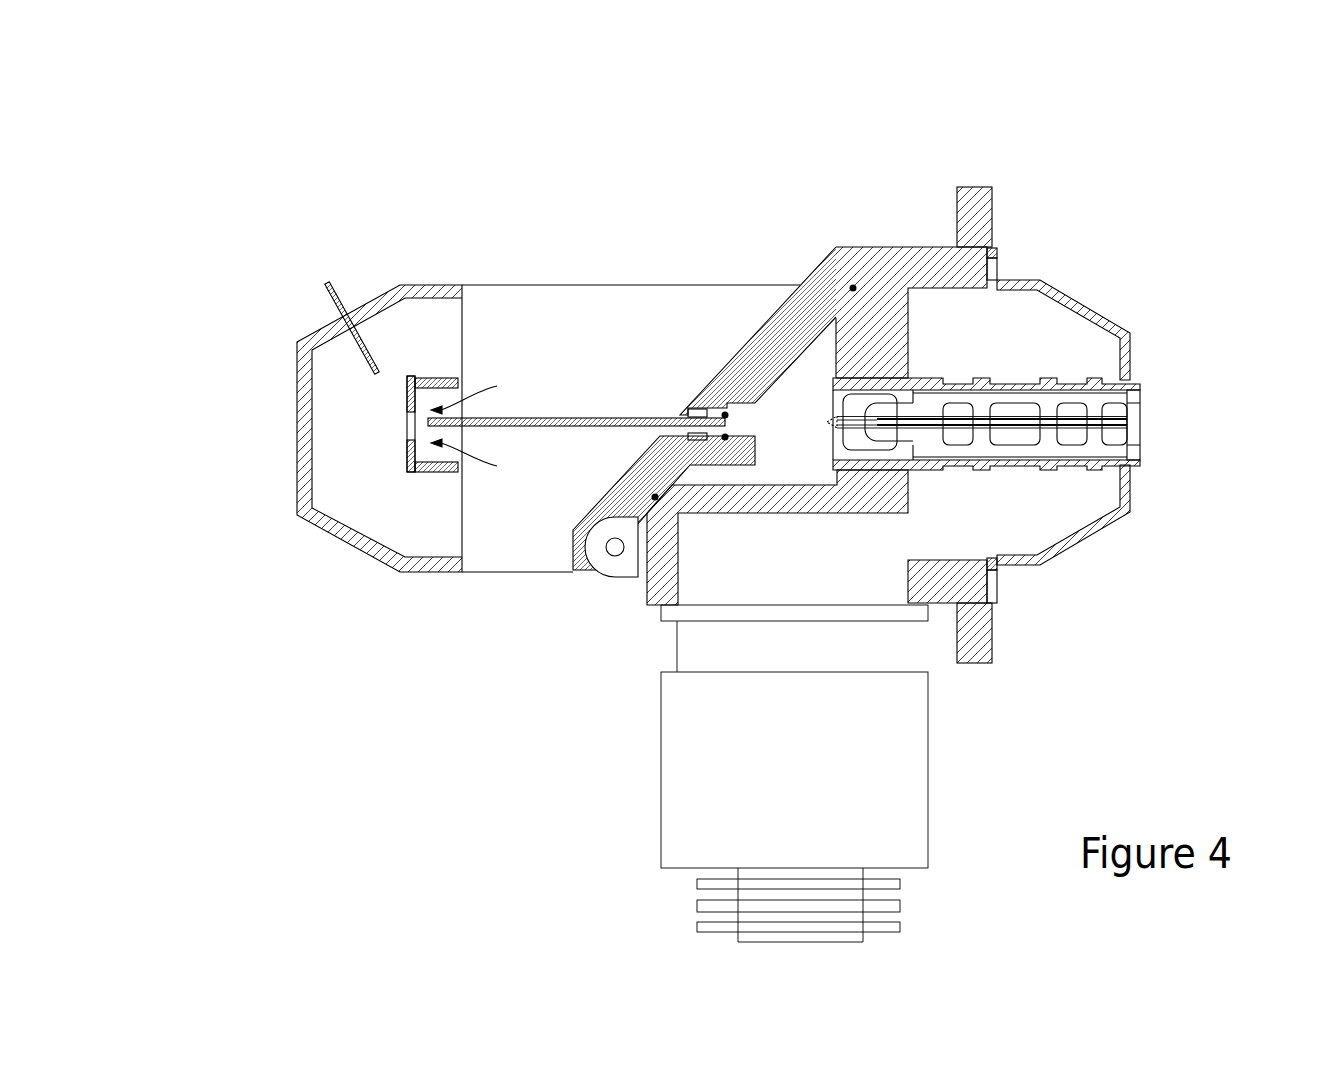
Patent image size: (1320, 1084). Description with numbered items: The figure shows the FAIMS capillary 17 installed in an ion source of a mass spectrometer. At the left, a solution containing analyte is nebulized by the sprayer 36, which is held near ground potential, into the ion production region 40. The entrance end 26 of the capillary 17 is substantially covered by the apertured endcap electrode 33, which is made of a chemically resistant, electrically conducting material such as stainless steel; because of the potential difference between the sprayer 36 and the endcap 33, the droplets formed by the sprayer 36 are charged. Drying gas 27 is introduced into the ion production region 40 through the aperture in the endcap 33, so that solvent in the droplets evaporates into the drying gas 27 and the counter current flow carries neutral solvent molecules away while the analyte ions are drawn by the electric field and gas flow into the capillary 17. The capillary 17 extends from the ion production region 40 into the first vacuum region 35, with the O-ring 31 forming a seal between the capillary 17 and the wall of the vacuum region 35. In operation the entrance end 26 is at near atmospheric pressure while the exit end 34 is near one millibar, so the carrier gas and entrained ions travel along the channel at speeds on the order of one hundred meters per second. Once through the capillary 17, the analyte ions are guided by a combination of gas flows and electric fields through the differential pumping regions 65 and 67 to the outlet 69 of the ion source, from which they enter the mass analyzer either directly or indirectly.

The capillary 17 is at (580, 410).
The entrance end 26 is at (435, 430).
The drying gas 27 is at (474, 387).
The O-ring 31 is at (723, 414).
The apertured endcap electrode 33 is at (408, 460).
The exit end 34 is at (802, 413).
The first vacuum region 35 is at (787, 393).
The sprayer 36 is at (318, 287).
The ion production region 40 is at (418, 323).
The differential pumping region 65 is at (858, 397).
The differential pumping region 67 is at (1017, 375).
The outlet 69 is at (1148, 413).